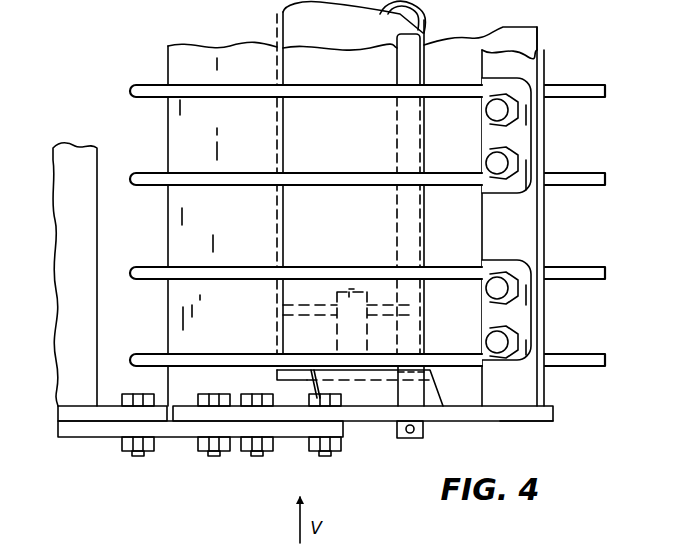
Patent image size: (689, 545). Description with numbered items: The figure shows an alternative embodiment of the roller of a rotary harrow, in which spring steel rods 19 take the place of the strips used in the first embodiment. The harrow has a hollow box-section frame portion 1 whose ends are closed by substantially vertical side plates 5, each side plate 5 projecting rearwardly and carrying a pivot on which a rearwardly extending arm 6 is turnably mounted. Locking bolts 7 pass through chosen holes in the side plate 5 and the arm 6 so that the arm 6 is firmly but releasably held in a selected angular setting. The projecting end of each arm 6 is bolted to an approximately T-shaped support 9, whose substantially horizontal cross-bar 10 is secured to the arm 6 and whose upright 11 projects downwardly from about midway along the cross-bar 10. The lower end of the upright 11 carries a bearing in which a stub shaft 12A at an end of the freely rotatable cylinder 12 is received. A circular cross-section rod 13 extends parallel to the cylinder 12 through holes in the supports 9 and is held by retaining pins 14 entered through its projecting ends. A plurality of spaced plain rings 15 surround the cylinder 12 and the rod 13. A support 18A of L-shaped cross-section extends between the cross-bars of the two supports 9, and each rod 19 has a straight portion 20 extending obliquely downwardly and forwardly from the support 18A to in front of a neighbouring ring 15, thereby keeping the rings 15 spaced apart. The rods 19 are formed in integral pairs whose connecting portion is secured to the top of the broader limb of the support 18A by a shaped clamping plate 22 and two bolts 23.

The hollow box-section frame portion 1 is at (68, 157).
The side plate 5 is at (73, 409).
The arm 6 is at (100, 434).
The locking bolt 7 is at (138, 457).
The support 9 is at (521, 424).
The cross-bar 10 is at (472, 421).
The upright 11 is at (275, 375).
The cylinder 12 is at (297, 23).
The stub shaft 12A is at (362, 282).
The rod 13 is at (408, 63).
The retaining pin 14 is at (407, 438).
The plain ring 15 is at (180, 58).
The support of L-shaped cross-section 18A is at (541, 248).
The spring steel rod 19 is at (346, 171).
The straight portion 20 is at (265, 97).
The clamping plate 22 is at (513, 139).
The bolt 23 is at (497, 163).